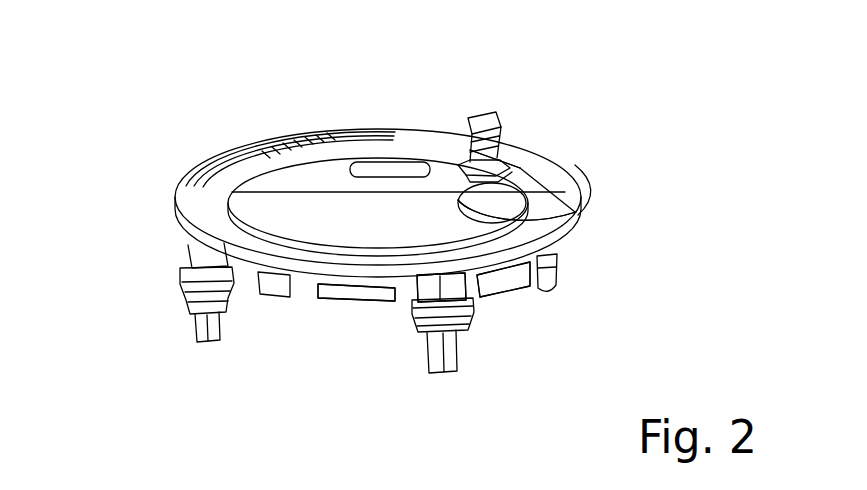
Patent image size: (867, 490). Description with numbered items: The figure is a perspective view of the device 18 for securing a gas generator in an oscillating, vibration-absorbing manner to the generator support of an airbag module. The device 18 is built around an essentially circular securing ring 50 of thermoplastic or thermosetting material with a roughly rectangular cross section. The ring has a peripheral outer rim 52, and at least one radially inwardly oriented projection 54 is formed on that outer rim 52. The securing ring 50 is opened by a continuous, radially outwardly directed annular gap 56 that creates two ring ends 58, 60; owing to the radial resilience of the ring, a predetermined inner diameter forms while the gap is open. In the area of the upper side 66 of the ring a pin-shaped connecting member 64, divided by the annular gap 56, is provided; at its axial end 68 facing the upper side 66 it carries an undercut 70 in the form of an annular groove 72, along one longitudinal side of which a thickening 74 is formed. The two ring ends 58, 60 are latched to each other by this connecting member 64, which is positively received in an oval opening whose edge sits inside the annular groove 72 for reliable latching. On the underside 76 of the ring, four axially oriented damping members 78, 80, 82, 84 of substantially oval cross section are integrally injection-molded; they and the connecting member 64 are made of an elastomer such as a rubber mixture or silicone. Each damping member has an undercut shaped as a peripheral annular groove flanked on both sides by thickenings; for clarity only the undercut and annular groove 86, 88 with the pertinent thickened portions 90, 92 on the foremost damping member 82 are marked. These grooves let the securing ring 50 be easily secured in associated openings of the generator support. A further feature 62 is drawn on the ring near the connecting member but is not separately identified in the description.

The device 18 is at (236, 112).
The securing ring 50 is at (305, 130).
The outer rim 52 is at (583, 190).
The radially inwardly oriented projection 54 is at (220, 154).
The annular gap 56 is at (456, 168).
The ring end 58 is at (466, 155).
The ring end 60 is at (508, 170).
The ring surface 62 is at (555, 150).
The pin-shaped connecting member 64 is at (494, 108).
The upper side 66 is at (366, 150).
The radial rib 68 is at (576, 212).
The undercut 70 is at (576, 212).
The annular groove 72 is at (545, 150).
The thickening 74 is at (545, 150).
The underside 76 is at (303, 282).
The damping member 78 is at (210, 244).
The damping member 80 is at (213, 336).
The damping member 82 is at (442, 364).
The damping member 84 is at (553, 270).
The boss 86 is at (414, 285).
The boss 88 is at (414, 285).
The thickened portion 90 is at (463, 326).
The thickened portion 92 is at (507, 290).